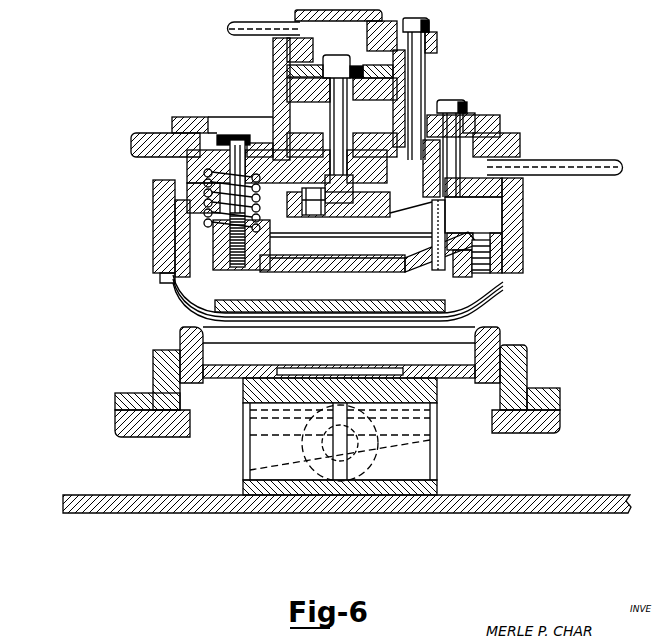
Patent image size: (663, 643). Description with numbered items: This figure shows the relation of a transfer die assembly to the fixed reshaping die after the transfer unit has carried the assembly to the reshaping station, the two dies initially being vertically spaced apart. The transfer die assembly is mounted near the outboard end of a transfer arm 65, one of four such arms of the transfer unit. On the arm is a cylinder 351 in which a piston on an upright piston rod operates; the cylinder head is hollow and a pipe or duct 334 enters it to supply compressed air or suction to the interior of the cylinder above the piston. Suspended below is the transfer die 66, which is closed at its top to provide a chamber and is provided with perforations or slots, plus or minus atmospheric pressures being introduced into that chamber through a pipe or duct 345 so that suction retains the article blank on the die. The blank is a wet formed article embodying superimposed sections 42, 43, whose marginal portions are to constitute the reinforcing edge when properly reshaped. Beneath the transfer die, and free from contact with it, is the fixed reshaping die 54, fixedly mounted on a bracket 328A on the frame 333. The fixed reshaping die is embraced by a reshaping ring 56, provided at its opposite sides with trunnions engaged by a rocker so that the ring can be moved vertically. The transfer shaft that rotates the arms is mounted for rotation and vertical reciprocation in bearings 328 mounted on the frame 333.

The pipe or duct 334 is at (229, 33).
The cylinder 351 is at (273, 82).
The transfer arm 65 is at (135, 138).
The pipe or duct 345 is at (593, 160).
The transfer die 66 is at (157, 252).
The article blank section 42 is at (510, 281).
The article blank section 43 is at (513, 289).
The fixed reshaping die 54 is at (180, 332).
The reshaping ring 56 is at (527, 353).
The bearings 328 is at (340, 477).
The bracket 328A is at (380, 470).
The frame 333 is at (150, 494).